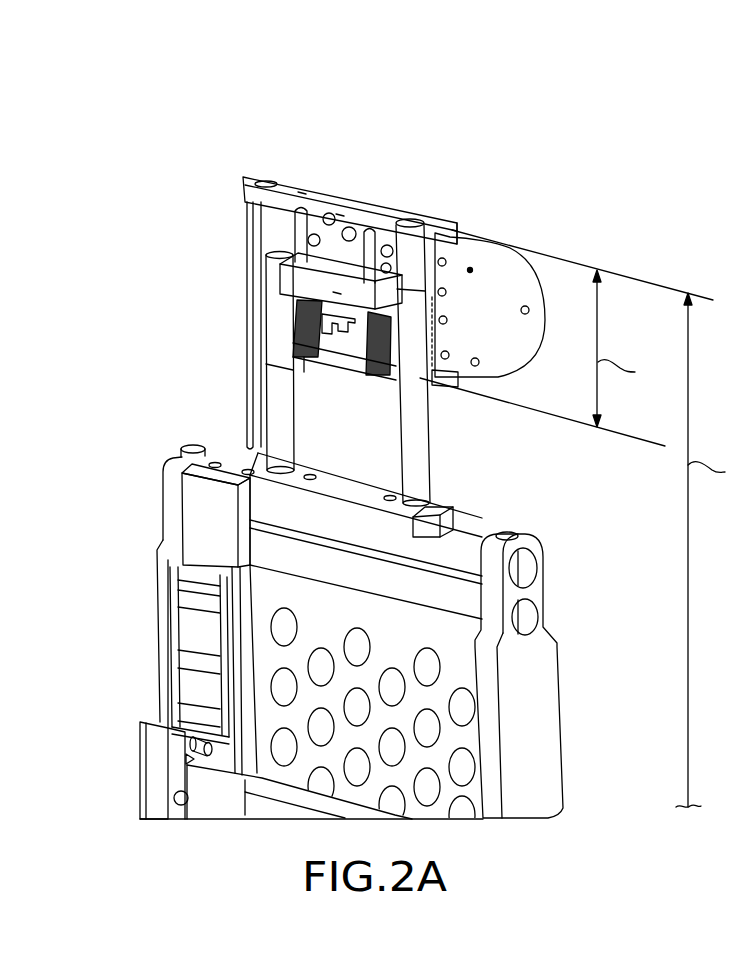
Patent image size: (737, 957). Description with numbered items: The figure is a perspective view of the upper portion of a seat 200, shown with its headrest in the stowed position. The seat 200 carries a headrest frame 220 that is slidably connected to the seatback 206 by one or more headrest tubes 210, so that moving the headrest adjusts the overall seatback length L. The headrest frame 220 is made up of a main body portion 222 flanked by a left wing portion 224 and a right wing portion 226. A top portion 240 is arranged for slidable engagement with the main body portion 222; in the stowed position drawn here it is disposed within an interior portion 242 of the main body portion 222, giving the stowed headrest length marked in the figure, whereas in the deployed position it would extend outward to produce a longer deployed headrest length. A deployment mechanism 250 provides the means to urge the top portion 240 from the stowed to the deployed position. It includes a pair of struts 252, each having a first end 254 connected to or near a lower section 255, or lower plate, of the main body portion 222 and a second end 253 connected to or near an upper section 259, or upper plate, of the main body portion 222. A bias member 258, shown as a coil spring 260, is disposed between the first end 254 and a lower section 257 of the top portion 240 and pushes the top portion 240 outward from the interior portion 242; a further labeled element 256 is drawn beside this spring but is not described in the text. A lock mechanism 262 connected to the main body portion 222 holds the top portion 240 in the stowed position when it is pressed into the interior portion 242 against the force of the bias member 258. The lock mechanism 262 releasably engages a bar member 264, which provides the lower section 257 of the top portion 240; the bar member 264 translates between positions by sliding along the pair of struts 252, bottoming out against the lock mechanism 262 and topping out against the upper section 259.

The seat 200 is at (121, 138).
The seatback 206 is at (540, 698).
The headrest tubes 210 is at (266, 407).
The headrest frame 220 is at (525, 462).
The main body portion 222 is at (427, 213).
The left wing portion 224 is at (276, 178).
The right wing portion 226 is at (522, 268).
The top portion 240 is at (340, 215).
The interior portion 242 is at (322, 242).
The deployment mechanism 250 is at (412, 322).
The struts 252 is at (291, 335).
The second end 253 is at (297, 213).
The first end 254 is at (266, 372).
The lower section 255 is at (350, 367).
The first spring 256 is at (295, 309).
The lower section of the top portion 257 is at (292, 285).
The bias member 258 is at (395, 355).
The upper section 259 is at (302, 191).
The coil spring 260 is at (398, 365).
The lock mechanism 262 is at (330, 335).
The bar member 264 is at (337, 290).